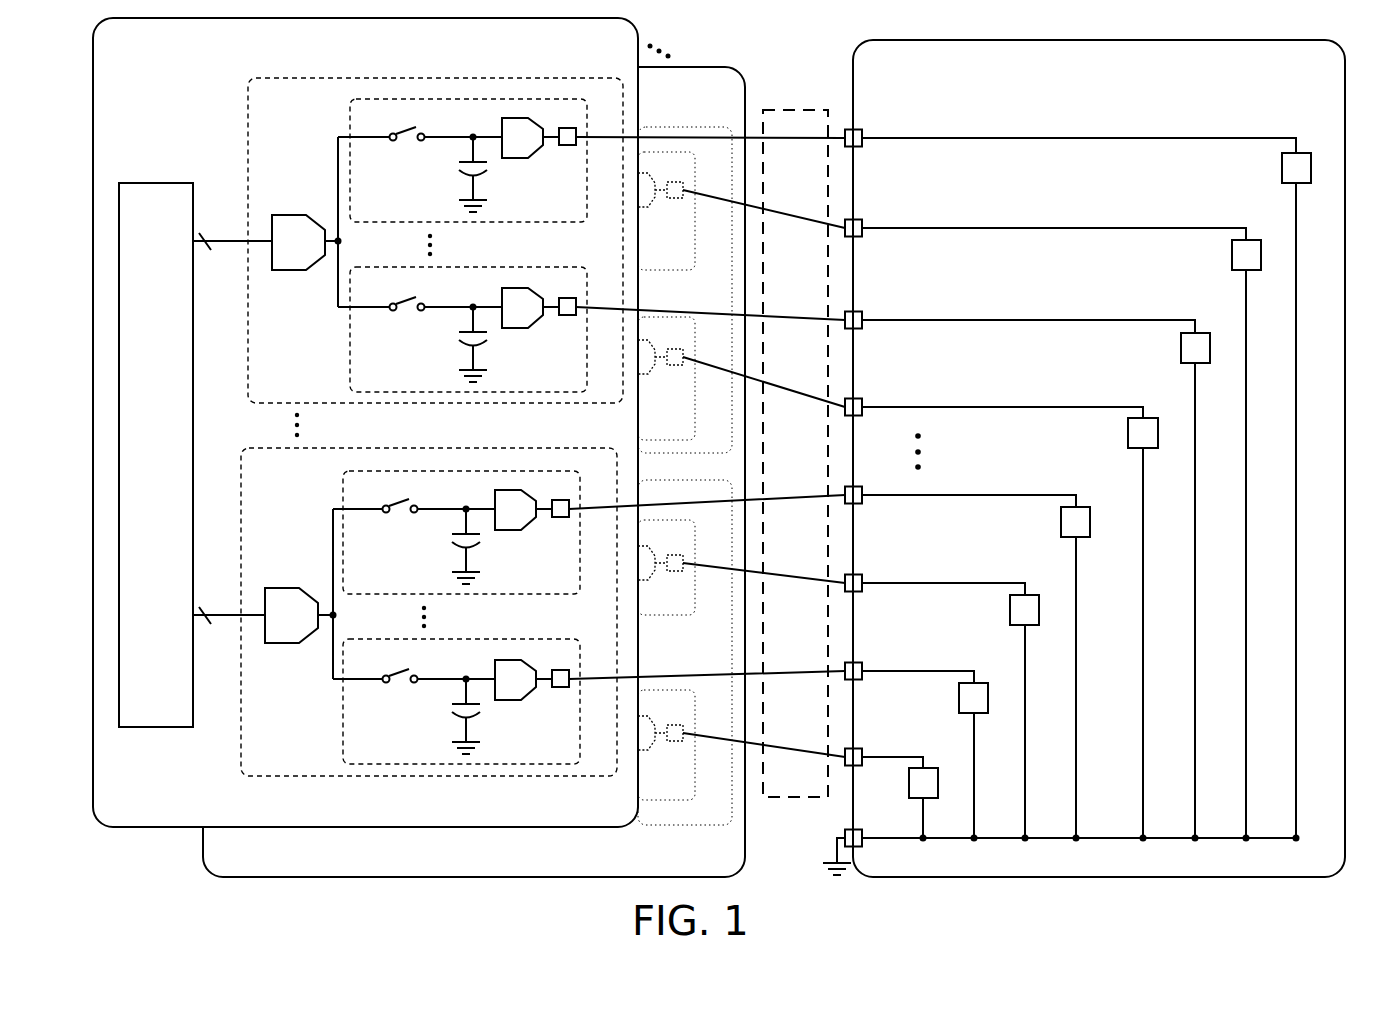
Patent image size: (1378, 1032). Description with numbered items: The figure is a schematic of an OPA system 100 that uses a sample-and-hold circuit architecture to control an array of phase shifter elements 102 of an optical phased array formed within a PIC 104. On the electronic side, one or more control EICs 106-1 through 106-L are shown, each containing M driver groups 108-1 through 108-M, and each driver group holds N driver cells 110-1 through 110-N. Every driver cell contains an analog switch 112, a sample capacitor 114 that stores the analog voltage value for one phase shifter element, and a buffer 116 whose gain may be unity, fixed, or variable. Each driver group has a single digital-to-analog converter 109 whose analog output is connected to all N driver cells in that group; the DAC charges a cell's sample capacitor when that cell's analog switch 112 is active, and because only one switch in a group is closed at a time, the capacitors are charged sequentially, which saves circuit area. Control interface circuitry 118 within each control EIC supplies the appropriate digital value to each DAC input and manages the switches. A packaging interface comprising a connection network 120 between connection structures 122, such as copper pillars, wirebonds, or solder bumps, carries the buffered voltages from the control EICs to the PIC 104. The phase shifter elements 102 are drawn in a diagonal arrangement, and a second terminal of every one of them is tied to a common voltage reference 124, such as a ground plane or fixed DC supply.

The OPA system 100 is at (746, 34).
The phase shifter element 102 is at (1311, 177).
The PIC 104 is at (1124, 106).
The control EIC 106-1 is at (602, 46).
The control EIC 106-L is at (723, 100).
The driver group 108-1 is at (314, 130).
The driver group 108-M is at (314, 500).
The digital-to-analog converter (DAC) 109 is at (312, 268).
The driver cell 110-1 is at (460, 346).
The driver cell 110-N is at (403, 377).
The analog switch 112 is at (411, 148).
The sample capacitor 114 is at (497, 172).
The buffer 116 is at (506, 120).
The control interface circuitry 118 is at (170, 225).
The connection network 120 is at (797, 108).
The connection structure 122 is at (570, 146).
The common voltage reference 124 is at (819, 847).